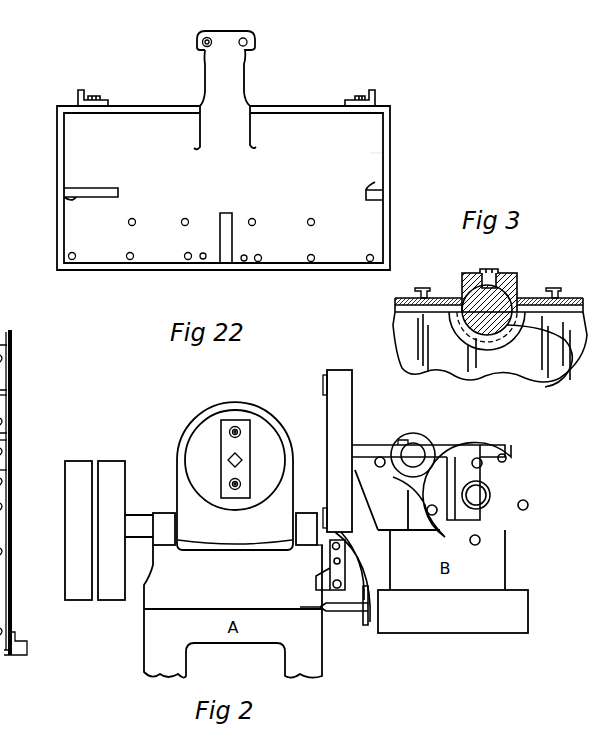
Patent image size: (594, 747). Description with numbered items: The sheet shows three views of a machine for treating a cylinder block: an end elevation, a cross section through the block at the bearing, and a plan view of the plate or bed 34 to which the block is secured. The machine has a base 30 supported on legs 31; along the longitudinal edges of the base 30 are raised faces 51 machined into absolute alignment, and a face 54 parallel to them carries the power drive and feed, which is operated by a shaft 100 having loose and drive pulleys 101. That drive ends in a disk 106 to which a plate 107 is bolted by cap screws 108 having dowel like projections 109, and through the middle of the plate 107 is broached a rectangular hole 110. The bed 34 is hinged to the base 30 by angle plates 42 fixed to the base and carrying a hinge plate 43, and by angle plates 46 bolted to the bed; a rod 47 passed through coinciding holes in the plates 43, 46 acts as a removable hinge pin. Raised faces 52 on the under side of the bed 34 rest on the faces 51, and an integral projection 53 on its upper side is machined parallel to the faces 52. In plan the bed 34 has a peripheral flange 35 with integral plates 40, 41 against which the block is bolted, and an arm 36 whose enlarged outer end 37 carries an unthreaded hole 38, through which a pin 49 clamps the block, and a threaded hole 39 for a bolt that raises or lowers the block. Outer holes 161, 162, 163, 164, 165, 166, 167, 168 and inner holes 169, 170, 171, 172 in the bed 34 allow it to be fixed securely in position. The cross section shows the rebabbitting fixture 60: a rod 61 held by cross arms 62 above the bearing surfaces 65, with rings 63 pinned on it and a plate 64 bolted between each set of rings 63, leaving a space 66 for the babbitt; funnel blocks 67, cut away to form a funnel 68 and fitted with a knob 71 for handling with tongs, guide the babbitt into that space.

In FIG. 2, the base 30 is at (233, 577).
In FIG. 2, the legs 31 is at (233, 643).
In FIG. 22, the plate or bed 34 is at (370, 153).
In FIG. 2, the plate or bed 34 is at (352, 385).
In FIG. 22, the peripheral flange 35 is at (62, 137).
In FIG. 22, the arm 36 is at (246, 68).
In FIG. 2, the arm 36 is at (357, 545).
In FIG. 22, the outer end of the arm 37 is at (220, 31).
In FIG. 22, the hole 38 is at (248, 42).
In FIG. 22, the hole 39 is at (201, 43).
In FIG. 22, the plate 40 is at (378, 183).
In FIG. 22, the plate 41 is at (72, 203).
In FIG. 2, the angle plates 42 is at (333, 614).
In FIG. 2, the hinge plate 43 is at (365, 622).
In FIG. 22, the angle plates 46 is at (76, 97).
In FIG. 2, the angle plates 46 is at (320, 549).
In FIG. 2, the rod 47 is at (338, 565).
In FIG. 2, the pin 49 is at (380, 607).
In FIG. 2, the raised faces 51 is at (235, 542).
In FIG. 2, the raised faces 52 is at (323, 380).
In FIG. 22, the projection 53 is at (228, 219).
In FIG. 2, the face 54 is at (232, 552).
In FIG. 2, the fixture 60 is at (0, 395).
In FIG. 3, the rod 61 is at (495, 298).
In FIG. 2, the rod 61 is at (413, 455).
In FIG. 2, the cross arms 62 is at (0, 347).
In FIG. 3, the rings 63 is at (520, 300).
In FIG. 2, the rings 63 is at (425, 440).
In FIG. 3, the plate 64 is at (470, 273).
In FIG. 2, the plate 64 is at (400, 440).
In FIG. 3, the bearing surfaces 65 is at (503, 343).
In FIG. 3, the space 66 is at (562, 368).
In FIG. 3, the funnel blocks 67 is at (399, 298).
In FIG. 2, the funnel blocks 67 is at (0, 440).
In FIG. 2, the funnel 68 is at (0, 470).
In FIG. 3, the knob 71 is at (426, 293).
In FIG. 2, the shaft 100 is at (136, 513).
In FIG. 2, the loose and drive pulleys 101 is at (110, 461).
In FIG. 2, the disk 106 is at (190, 406).
In FIG. 2, the plate 107 is at (237, 426).
In FIG. 2, the cap screws 108 is at (240, 432).
In FIG. 2, the dowel like projections 109 is at (231, 429).
In FIG. 2, the rectangular hole 110 is at (228, 460).
In FIG. 22, the outer hole 161 is at (74, 260).
In FIG. 22, the outer hole 162 is at (130, 260).
In FIG. 22, the outer hole 163 is at (188, 260).
In FIG. 22, the outer hole 164 is at (204, 260).
In FIG. 22, the outer hole 165 is at (245, 255).
In FIG. 22, the outer hole 166 is at (259, 262).
In FIG. 22, the outer hole 167 is at (312, 262).
In FIG. 22, the outer hole 168 is at (370, 262).
In FIG. 22, the inner hole 169 is at (134, 219).
In FIG. 22, the inner hole 170 is at (186, 219).
In FIG. 22, the inner hole 171 is at (256, 220).
In FIG. 22, the inner hole 172 is at (312, 219).